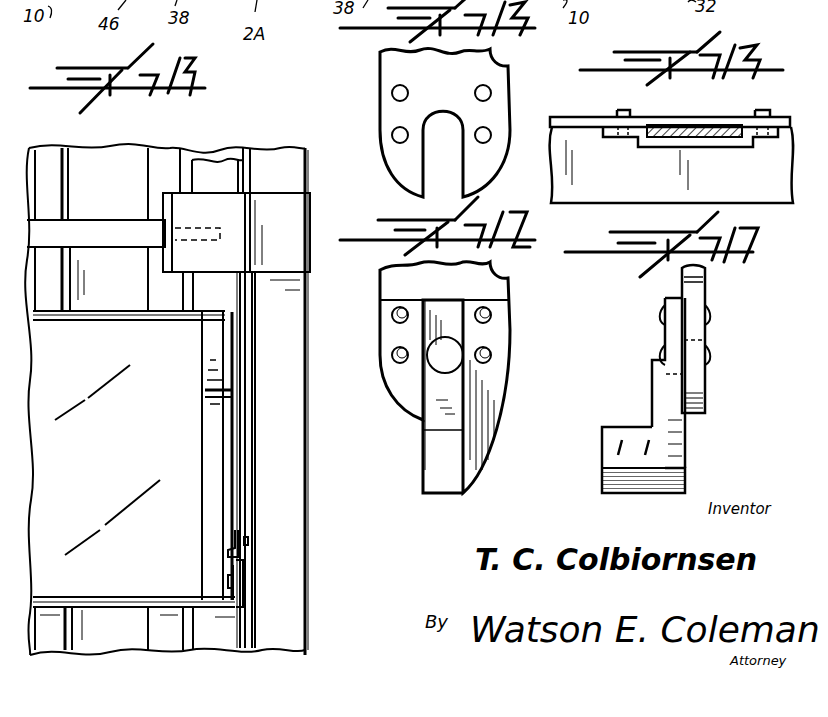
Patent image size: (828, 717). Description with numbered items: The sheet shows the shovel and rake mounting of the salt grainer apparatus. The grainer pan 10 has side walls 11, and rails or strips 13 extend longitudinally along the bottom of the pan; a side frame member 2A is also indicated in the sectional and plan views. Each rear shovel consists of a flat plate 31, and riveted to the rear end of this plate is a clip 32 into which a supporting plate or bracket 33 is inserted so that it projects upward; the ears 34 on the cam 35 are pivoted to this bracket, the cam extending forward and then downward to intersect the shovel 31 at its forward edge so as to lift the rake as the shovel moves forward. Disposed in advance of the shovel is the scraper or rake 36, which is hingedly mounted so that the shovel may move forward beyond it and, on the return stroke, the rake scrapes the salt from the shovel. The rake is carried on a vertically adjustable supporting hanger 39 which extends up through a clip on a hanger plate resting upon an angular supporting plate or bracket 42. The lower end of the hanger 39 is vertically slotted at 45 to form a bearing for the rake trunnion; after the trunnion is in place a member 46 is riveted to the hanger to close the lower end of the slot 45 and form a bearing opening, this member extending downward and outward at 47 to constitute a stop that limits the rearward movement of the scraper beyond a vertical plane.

In FIG. 13, the side frame member 2A is at (245, 498).
In FIG. 18, the side frame member 2A is at (565, 175).
In FIG. 13, the grainer pan 10 is at (107, 158).
In FIG. 13, the side wall 11 is at (290, 409).
In FIG. 13, the rail 13 is at (48, 155).
In FIG. 13, the flat plate 31 is at (107, 345).
In FIG. 13, the clip 32 is at (236, 537).
In FIG. 18, the clip 32 is at (664, 150).
In FIG. 13, the supporting plate or bracket 33 is at (243, 562).
In FIG. 18, the supporting plate or bracket 33 is at (710, 128).
In FIG. 13, the ear 34 is at (242, 566).
In FIG. 13, the cam 35 is at (212, 442).
In FIG. 13, the scraper or rake 36 is at (113, 230).
In FIG. 15, the supporting hanger 39 is at (385, 68).
In FIG. 16, the supporting hanger 39 is at (398, 272).
In FIG. 17, the supporting hanger 39 is at (697, 287).
In FIG. 13, the angular supporting plate or bracket 42 is at (278, 193).
In FIG. 15, the slot 45 is at (433, 150).
In FIG. 16, the slot 45 is at (445, 338).
In FIG. 16, the member 46 is at (492, 330).
In FIG. 17, the member 46 is at (675, 356).
In FIG. 16, the stop 47 is at (447, 468).
In FIG. 17, the stop 47 is at (613, 437).